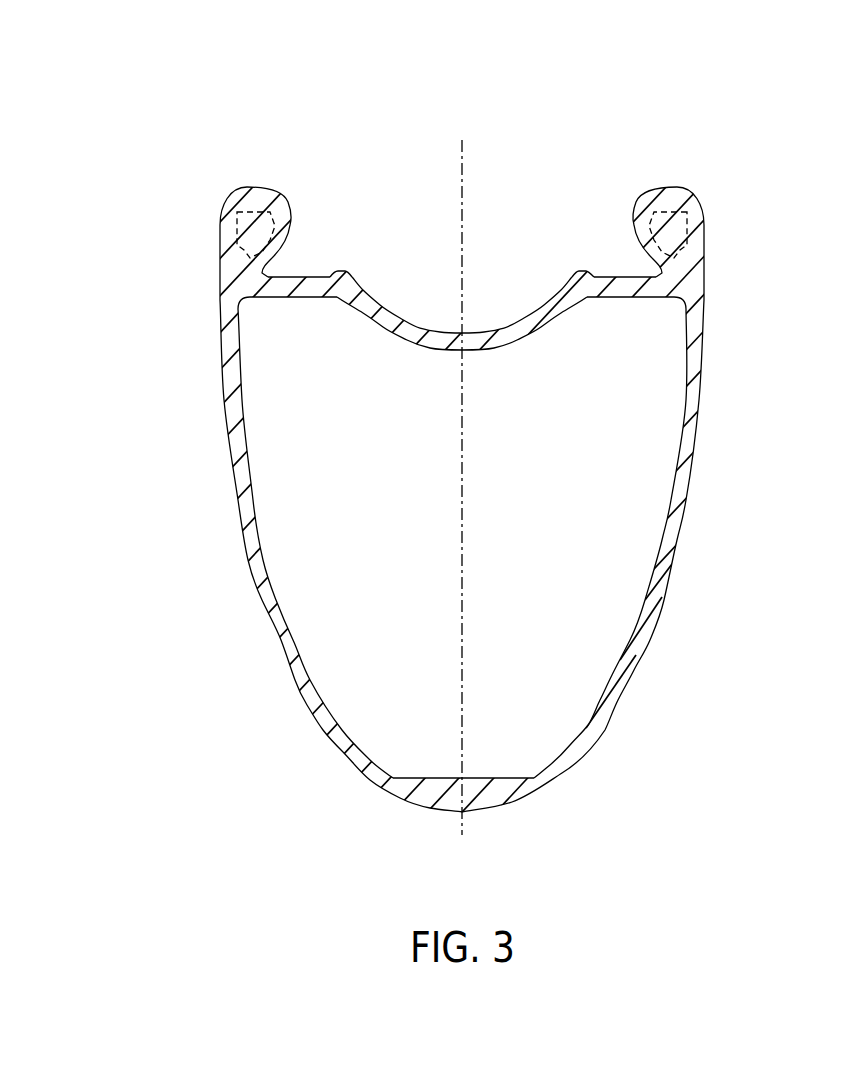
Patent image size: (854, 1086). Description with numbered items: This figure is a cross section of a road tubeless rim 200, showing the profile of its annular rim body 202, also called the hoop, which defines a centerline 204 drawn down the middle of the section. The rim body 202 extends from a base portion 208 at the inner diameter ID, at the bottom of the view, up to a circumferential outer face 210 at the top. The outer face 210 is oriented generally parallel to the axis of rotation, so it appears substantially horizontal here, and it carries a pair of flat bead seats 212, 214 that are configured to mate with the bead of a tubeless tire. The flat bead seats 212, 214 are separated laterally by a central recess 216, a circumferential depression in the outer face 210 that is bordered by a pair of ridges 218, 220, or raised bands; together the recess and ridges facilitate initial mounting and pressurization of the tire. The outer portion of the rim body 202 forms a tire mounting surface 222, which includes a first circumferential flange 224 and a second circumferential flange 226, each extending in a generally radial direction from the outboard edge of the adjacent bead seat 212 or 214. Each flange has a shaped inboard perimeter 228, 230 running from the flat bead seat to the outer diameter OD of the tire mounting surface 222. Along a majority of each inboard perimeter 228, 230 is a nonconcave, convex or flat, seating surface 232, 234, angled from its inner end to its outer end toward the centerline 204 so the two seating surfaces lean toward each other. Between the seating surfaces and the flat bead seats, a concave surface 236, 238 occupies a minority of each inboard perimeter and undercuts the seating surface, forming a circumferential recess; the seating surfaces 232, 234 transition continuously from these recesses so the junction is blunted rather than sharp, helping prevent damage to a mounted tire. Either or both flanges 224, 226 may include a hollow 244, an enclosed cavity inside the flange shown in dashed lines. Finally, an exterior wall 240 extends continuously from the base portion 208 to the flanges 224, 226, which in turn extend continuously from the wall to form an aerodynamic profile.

The road tubeless rim 200 is at (138, 212).
The rim body 202 is at (628, 665).
The centerline 204 is at (463, 178).
The base portion 208 is at (526, 817).
The outer face 210 is at (412, 175).
The first flat bead seat 212 is at (303, 275).
The second flat bead seat 214 is at (610, 273).
The central recess 216 is at (422, 325).
The first ridge 218 is at (345, 268).
The second ridge 220 is at (578, 271).
The tire mounting surface 222 is at (583, 75).
The first circumferential flange 224 is at (247, 187).
The second circumferential flange 226 is at (675, 187).
The first inboard perimeter 228 is at (310, 228).
The second inboard perimeter 230 is at (602, 186).
The first nonconcave seating surface 232 is at (292, 232).
The second nonconcave seating surface 234 is at (632, 222).
The first concave surface 236 is at (268, 274).
The second concave surface 238 is at (657, 274).
The exterior wall 240 is at (246, 556).
The hollow 244 is at (222, 249).
The outer diameter OD is at (750, 113).
The inner diameter ID is at (402, 817).